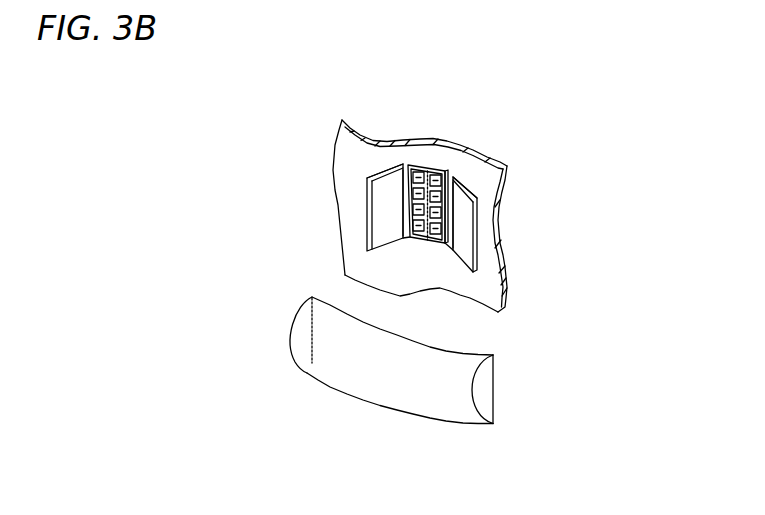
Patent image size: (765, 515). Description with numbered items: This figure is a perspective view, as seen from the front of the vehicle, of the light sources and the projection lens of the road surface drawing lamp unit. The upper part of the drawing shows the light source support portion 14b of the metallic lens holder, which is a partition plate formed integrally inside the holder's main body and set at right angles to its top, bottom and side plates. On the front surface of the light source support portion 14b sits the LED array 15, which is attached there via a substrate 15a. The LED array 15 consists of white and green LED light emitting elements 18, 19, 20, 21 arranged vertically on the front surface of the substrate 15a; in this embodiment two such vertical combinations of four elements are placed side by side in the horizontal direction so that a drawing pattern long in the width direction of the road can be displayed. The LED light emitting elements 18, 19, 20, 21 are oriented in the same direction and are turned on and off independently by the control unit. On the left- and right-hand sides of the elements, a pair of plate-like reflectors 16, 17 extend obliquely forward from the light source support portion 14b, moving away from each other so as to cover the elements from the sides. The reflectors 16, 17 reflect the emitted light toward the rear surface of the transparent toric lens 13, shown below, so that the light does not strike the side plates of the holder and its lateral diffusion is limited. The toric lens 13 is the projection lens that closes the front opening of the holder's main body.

The toric lens 13 is at (368, 408).
The light source support portion 14b is at (492, 275).
The LED array 15 is at (427, 254).
The substrate 15a is at (428, 176).
The reflector 16 is at (463, 242).
The reflector 17 is at (384, 198).
The LED light emitting element 18 is at (411, 166).
The LED light emitting element 19 is at (397, 184).
The LED light emitting element 20 is at (412, 213).
The LED light emitting element 21 is at (411, 240).